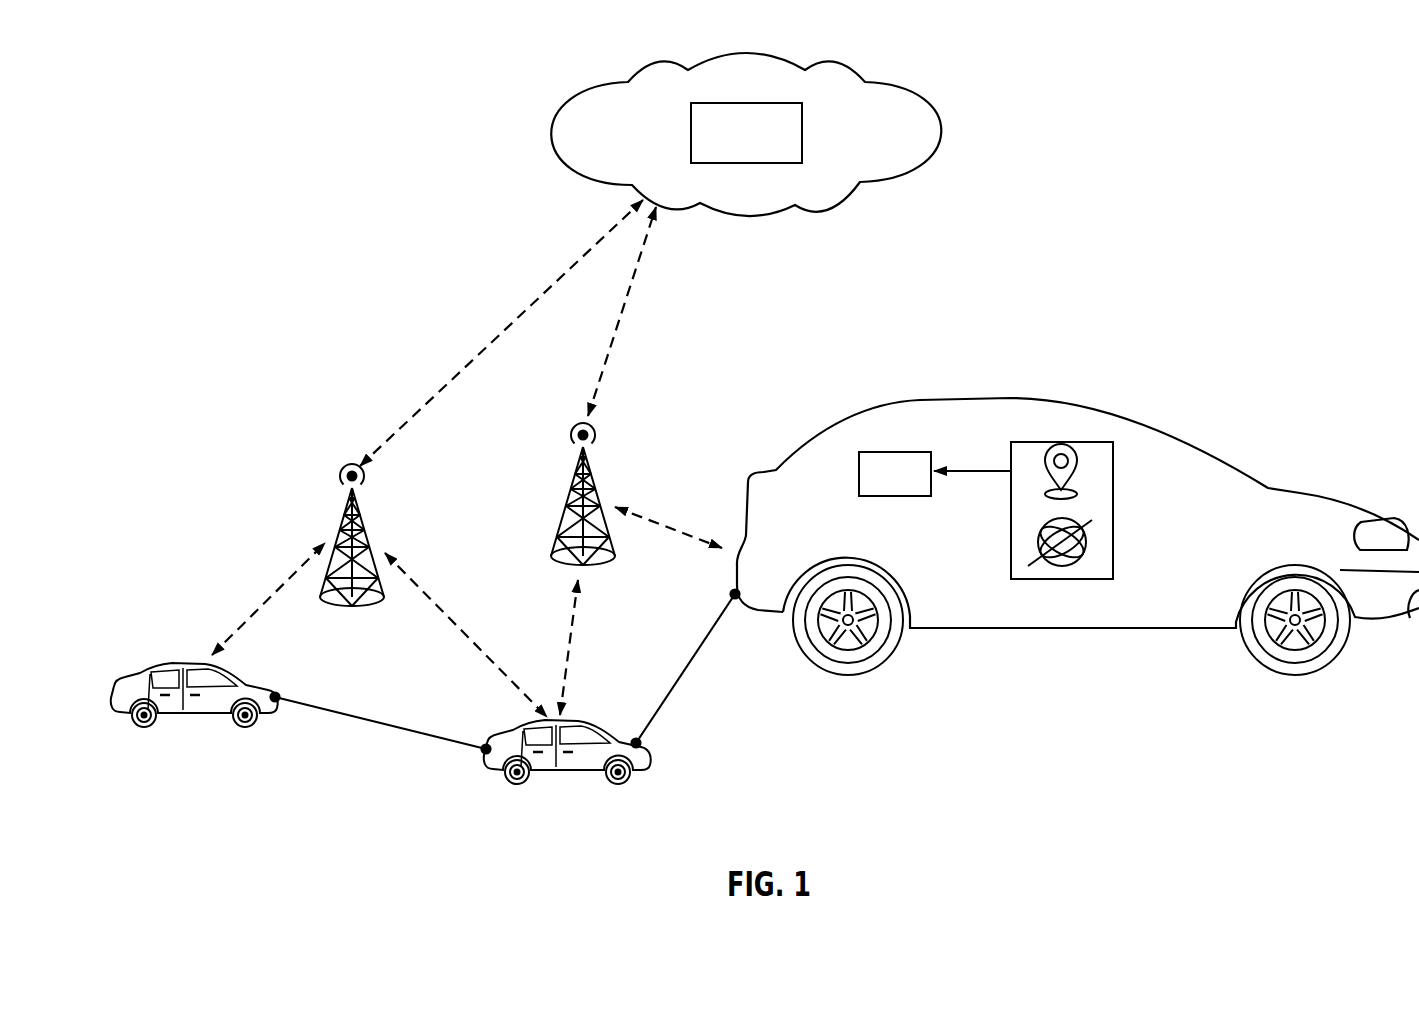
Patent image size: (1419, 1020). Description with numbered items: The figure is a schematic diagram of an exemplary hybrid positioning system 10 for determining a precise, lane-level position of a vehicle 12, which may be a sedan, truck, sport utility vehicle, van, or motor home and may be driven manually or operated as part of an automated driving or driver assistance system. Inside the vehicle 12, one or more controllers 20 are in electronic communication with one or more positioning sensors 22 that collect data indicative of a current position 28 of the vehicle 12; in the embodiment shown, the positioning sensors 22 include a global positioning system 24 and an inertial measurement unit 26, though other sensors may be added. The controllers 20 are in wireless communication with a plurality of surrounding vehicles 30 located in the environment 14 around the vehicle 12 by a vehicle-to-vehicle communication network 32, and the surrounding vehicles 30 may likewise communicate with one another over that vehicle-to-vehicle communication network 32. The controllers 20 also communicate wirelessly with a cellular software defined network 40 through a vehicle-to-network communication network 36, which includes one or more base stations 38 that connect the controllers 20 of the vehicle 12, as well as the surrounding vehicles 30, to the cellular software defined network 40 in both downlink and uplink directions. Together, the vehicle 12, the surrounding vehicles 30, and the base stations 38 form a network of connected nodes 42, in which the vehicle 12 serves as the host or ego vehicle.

The hybrid positioning system 10 is at (1078, 515).
The vehicle 12 is at (1195, 447).
The environment 14 is at (698, 302).
The controllers 20 is at (881, 488).
The positioning sensors 22 is at (1113, 493).
The global positioning system 24 is at (1057, 447).
The inertial measurement unit 26 is at (1087, 548).
The current position 28 is at (967, 472).
The surrounding vehicles 30 is at (168, 665).
The vehicle-to-vehicle communication network 32 is at (380, 727).
The vehicle-to-network communication network 36 is at (507, 324).
The base stations 38 is at (365, 518).
The cellular software defined network 40 is at (731, 146).
The network of connected nodes 42 is at (357, 426).